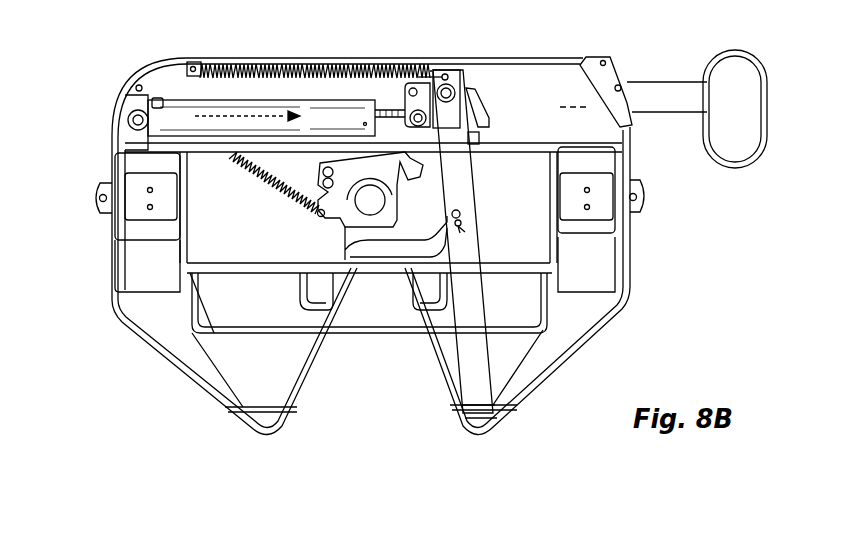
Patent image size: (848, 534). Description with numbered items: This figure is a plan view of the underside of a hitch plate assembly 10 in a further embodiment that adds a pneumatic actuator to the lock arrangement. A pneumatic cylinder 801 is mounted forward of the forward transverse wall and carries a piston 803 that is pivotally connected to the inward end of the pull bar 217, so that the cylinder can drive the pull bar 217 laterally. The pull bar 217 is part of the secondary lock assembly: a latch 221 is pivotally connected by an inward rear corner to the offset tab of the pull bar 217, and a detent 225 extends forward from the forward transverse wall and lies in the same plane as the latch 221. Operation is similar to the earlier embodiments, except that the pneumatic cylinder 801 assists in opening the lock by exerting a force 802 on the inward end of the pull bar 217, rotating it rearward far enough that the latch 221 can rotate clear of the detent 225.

The hitch plate assembly 10 is at (98, 58).
The pneumatic cylinder 801 is at (175, 119).
The force 802 is at (227, 115).
The piston 803 is at (389, 113).
The latch 221 is at (466, 110).
The detent 225 is at (481, 141).
The pull bar 217 is at (659, 96).